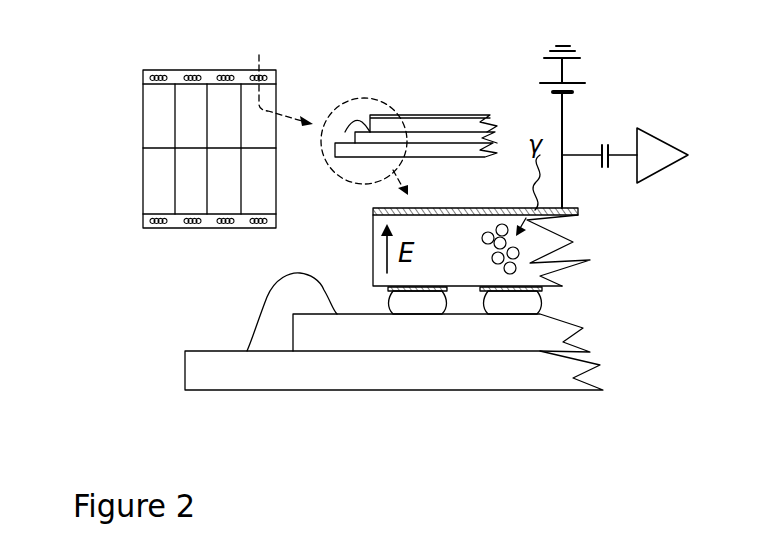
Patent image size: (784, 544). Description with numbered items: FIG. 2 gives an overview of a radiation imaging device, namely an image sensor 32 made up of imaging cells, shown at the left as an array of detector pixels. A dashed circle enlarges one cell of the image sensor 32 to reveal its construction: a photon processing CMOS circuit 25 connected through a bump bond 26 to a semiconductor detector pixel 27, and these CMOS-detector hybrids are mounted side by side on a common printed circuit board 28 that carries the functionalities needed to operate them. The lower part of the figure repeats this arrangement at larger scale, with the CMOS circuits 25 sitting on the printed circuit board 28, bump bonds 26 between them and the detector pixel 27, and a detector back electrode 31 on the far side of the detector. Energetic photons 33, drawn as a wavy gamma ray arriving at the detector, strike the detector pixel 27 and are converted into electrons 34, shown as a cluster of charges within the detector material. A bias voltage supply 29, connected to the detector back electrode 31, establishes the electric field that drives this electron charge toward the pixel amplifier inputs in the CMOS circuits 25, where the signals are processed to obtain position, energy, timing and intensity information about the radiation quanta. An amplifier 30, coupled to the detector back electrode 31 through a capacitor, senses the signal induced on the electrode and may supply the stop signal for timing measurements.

The CMOS circuit 25 is at (370, 124).
The bump bond 26 is at (523, 303).
The detector pixel 27 is at (437, 125).
The printed circuit board 28 is at (473, 150).
The bias voltage supply 29 is at (633, 67).
The amplifier 30 is at (673, 157).
The detector back electrode 31 is at (372, 212).
The image sensor 32 is at (165, 128).
The energetic photons 33 is at (537, 193).
The electrons 34 is at (590, 260).